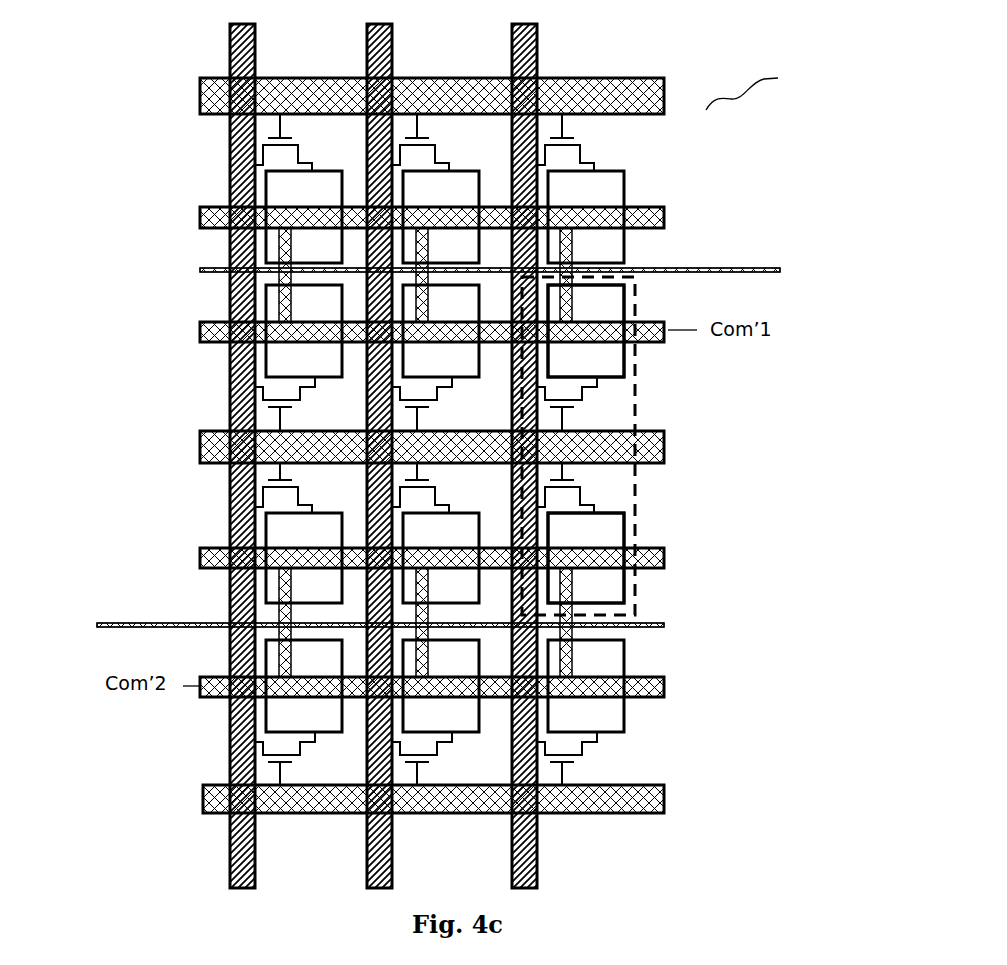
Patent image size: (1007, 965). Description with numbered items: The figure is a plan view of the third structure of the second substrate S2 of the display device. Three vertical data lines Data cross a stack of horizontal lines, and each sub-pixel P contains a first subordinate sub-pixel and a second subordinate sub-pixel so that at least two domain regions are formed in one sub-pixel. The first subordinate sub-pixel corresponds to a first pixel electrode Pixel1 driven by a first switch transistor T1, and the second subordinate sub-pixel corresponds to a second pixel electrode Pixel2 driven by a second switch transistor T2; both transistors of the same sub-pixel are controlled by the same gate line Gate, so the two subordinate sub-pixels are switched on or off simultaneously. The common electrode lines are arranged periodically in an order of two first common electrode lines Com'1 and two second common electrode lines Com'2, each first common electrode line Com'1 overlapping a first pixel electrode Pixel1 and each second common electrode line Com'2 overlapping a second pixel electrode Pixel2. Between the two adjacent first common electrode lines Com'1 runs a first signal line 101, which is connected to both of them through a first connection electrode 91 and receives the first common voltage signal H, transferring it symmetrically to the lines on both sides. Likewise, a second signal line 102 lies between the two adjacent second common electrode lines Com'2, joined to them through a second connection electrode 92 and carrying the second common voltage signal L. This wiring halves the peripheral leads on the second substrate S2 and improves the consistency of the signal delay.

The first connection electrode 91 is at (567, 248).
The second connection electrode 92 is at (232, 533).
The first signal line 101 is at (752, 272).
The second signal line 102 is at (127, 627).
The data line Data is at (538, 50).
The gate line Gate is at (668, 447).
The first common electrode line Com'1 is at (487, 219).
The second common electrode line Com'2 is at (384, 558).
The first pixel electrode Pixel1 is at (585, 355).
The second pixel electrode Pixel2 is at (592, 588).
The first switch transistor T1 is at (573, 404).
The second switch transistor T2 is at (573, 488).
The sub-pixel P is at (636, 497).
The first common voltage signal H is at (500, 271).
The second common voltage signal L is at (372, 625).
The second substrate S2 is at (767, 87).